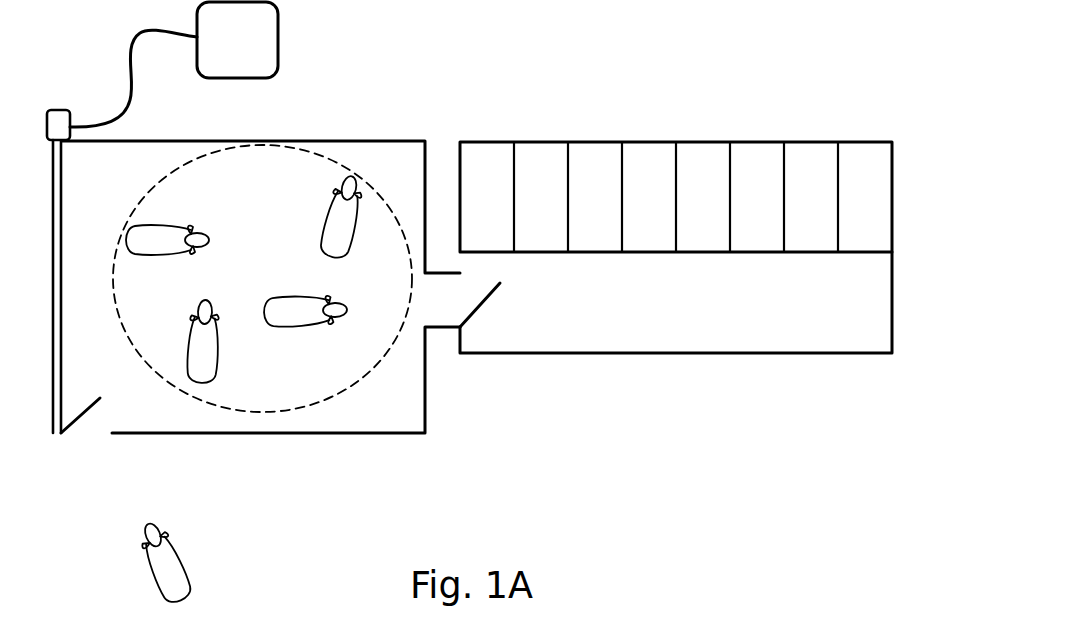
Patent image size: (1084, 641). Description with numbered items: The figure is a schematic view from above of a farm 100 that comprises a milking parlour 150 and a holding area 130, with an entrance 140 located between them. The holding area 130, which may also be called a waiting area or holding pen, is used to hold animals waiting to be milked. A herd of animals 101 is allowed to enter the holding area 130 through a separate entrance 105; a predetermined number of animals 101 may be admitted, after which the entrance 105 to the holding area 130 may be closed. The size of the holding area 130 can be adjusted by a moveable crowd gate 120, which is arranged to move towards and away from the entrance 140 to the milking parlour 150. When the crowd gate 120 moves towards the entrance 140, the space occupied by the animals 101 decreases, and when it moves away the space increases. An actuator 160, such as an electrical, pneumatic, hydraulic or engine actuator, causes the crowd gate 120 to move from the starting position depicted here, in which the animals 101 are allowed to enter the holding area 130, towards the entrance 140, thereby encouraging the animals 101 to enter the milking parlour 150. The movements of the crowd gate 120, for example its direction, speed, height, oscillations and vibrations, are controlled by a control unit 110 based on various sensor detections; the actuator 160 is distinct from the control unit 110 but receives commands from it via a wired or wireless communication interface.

The farm 100 is at (915, 73).
The animals 101 is at (268, 412).
The entrance 105 is at (80, 420).
The control unit 110 is at (261, 50).
The moveable crowd gate 120 is at (57, 400).
The holding area 130 is at (410, 165).
The entrance 140 is at (473, 315).
The milking parlour 150 is at (677, 142).
The actuator 160 is at (60, 128).